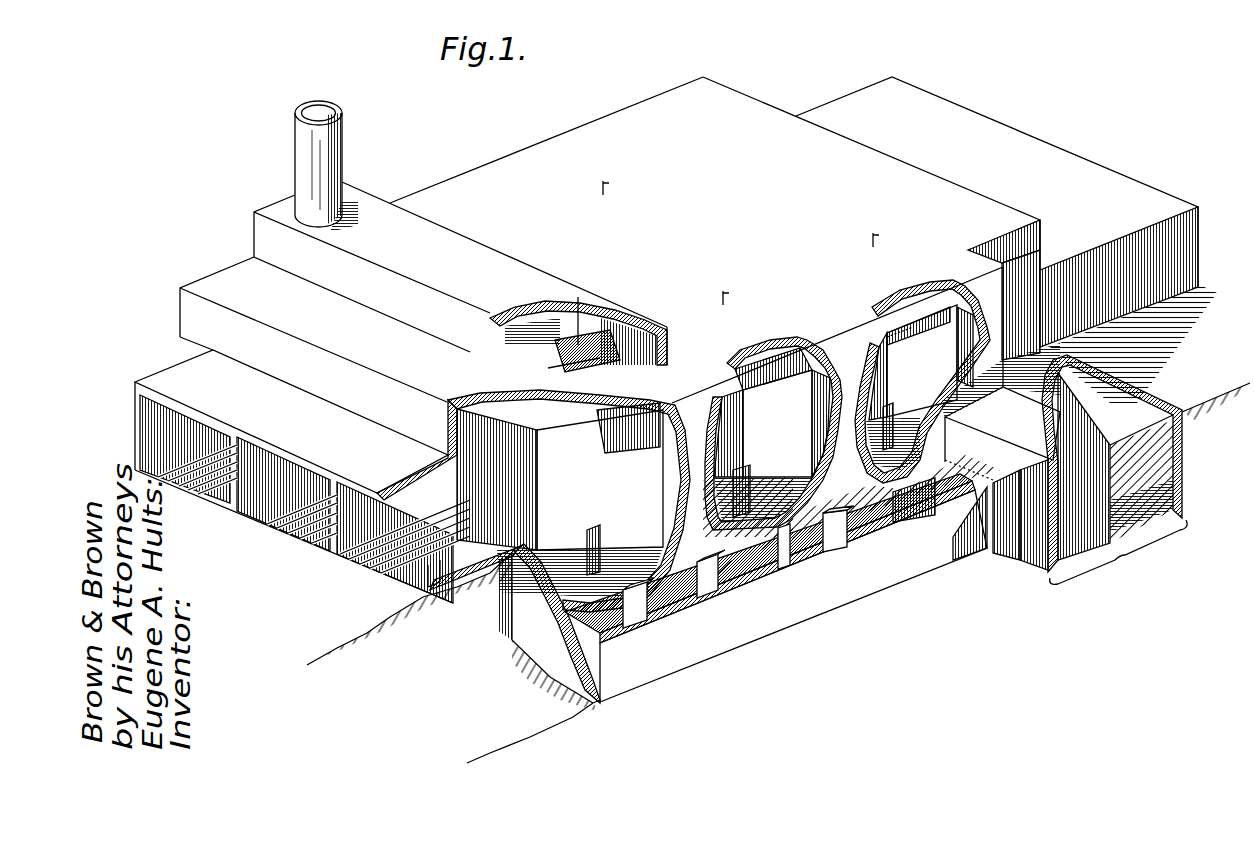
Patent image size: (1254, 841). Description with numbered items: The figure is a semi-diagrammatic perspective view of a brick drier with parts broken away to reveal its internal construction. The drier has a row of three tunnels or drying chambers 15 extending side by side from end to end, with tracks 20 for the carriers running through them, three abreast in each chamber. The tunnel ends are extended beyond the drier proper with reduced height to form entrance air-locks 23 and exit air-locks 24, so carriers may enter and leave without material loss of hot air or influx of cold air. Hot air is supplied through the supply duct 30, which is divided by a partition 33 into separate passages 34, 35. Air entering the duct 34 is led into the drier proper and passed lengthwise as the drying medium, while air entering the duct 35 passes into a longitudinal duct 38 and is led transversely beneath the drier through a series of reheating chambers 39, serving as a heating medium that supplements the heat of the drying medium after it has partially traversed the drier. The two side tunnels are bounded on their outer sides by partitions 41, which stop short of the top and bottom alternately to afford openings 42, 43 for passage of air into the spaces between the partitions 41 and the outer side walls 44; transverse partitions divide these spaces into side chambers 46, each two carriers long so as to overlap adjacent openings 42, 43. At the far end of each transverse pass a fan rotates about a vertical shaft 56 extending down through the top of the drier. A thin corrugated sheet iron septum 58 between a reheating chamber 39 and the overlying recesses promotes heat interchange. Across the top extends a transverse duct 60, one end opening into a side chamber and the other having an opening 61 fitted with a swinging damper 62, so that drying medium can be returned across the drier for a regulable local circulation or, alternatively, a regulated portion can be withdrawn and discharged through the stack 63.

The drying chambers 15 is at (150, 407).
The tracks 20 is at (205, 487).
The entrance air-locks 23 is at (167, 373).
The exit air-locks 24 is at (1050, 158).
The supply duct 30 is at (1118, 552).
The partition 33 is at (1115, 452).
The duct 34 is at (1160, 437).
The duct 35 is at (1048, 485).
The longitudinal duct 38 is at (897, 510).
The reheating chambers 39 is at (628, 612).
The partitions 41 is at (537, 460).
The openings 42 is at (611, 446).
The openings 43 is at (590, 548).
The outer side walls 44 is at (680, 405).
The side chambers 46 is at (747, 427).
The vertical shaft 56 is at (609, 186).
The corrugated sheet iron septum 58 is at (722, 520).
The transverse trunk or duct 60 is at (515, 270).
The opening 61 is at (548, 368).
The damper 62 is at (562, 350).
The stack 63 is at (340, 137).